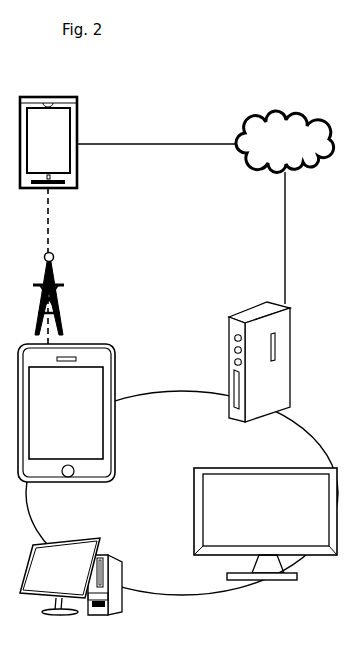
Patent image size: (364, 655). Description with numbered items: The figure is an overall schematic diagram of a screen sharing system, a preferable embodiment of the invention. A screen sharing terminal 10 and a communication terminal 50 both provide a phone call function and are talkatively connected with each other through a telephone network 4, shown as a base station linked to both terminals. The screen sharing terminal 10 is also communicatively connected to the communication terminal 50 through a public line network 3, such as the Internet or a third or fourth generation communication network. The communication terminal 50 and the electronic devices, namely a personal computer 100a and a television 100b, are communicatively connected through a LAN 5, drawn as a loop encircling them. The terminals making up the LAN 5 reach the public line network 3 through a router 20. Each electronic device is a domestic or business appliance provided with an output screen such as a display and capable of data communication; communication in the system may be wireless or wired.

The screen sharing terminal 10 is at (77, 101).
The public line network 3 is at (313, 118).
The router 20 is at (290, 308).
The telephone network 4 is at (53, 253).
The communication terminal 50 is at (114, 347).
The LAN 5 is at (325, 451).
The personal computer 100a is at (86, 538).
The television 100b is at (259, 469).